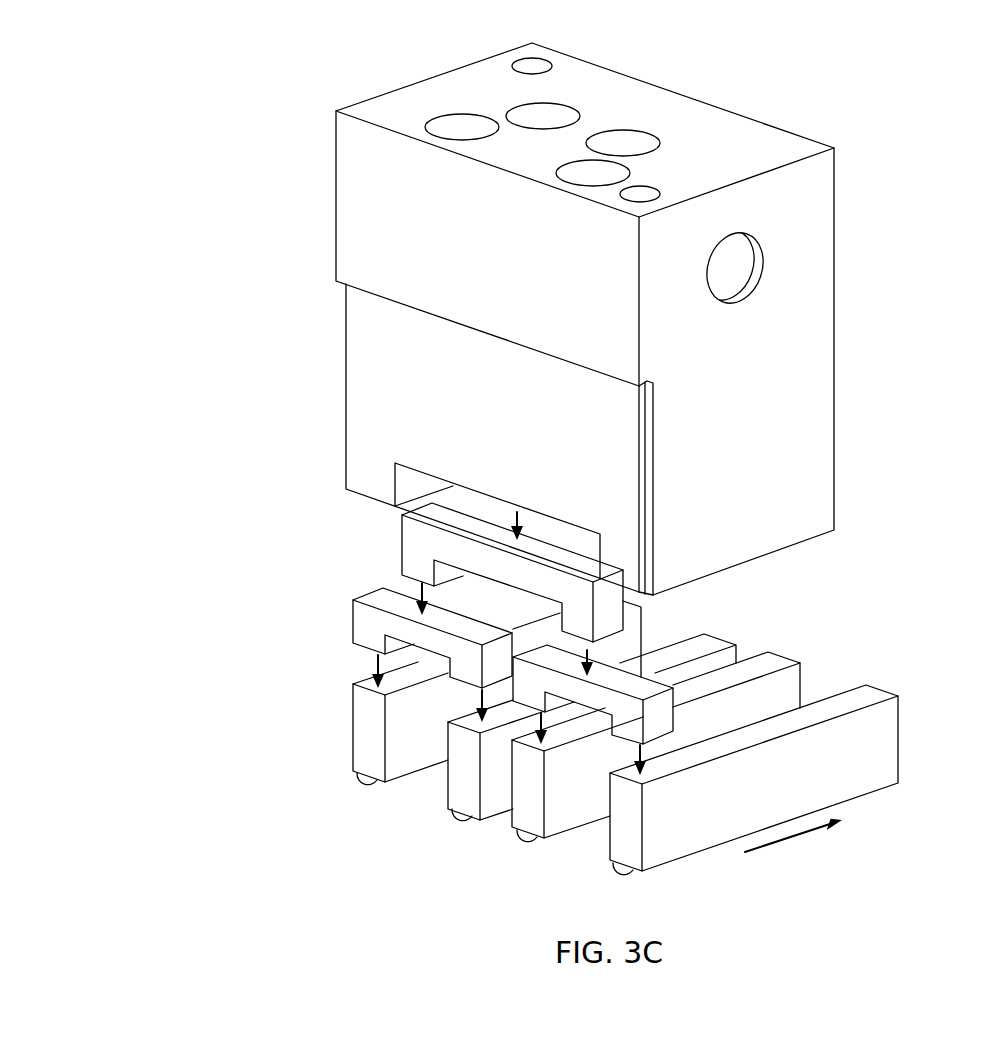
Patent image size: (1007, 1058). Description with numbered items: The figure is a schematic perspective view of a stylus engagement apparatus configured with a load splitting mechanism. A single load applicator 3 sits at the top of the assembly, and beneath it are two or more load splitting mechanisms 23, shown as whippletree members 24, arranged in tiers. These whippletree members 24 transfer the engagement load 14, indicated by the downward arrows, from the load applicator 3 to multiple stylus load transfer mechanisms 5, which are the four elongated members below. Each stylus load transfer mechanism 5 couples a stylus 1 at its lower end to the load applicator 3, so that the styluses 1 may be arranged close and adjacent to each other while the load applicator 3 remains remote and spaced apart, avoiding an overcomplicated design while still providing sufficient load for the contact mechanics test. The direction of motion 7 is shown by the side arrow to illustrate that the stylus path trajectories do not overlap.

The load applicator 3 is at (323, 46).
The load splitting mechanism 23 is at (258, 512).
The whippletree member 24 is at (417, 530).
The stylus load transfer mechanism 5 is at (627, 833).
The stylus 1 is at (462, 820).
The engagement load 14 is at (517, 522).
The direction of motion 7 is at (793, 841).